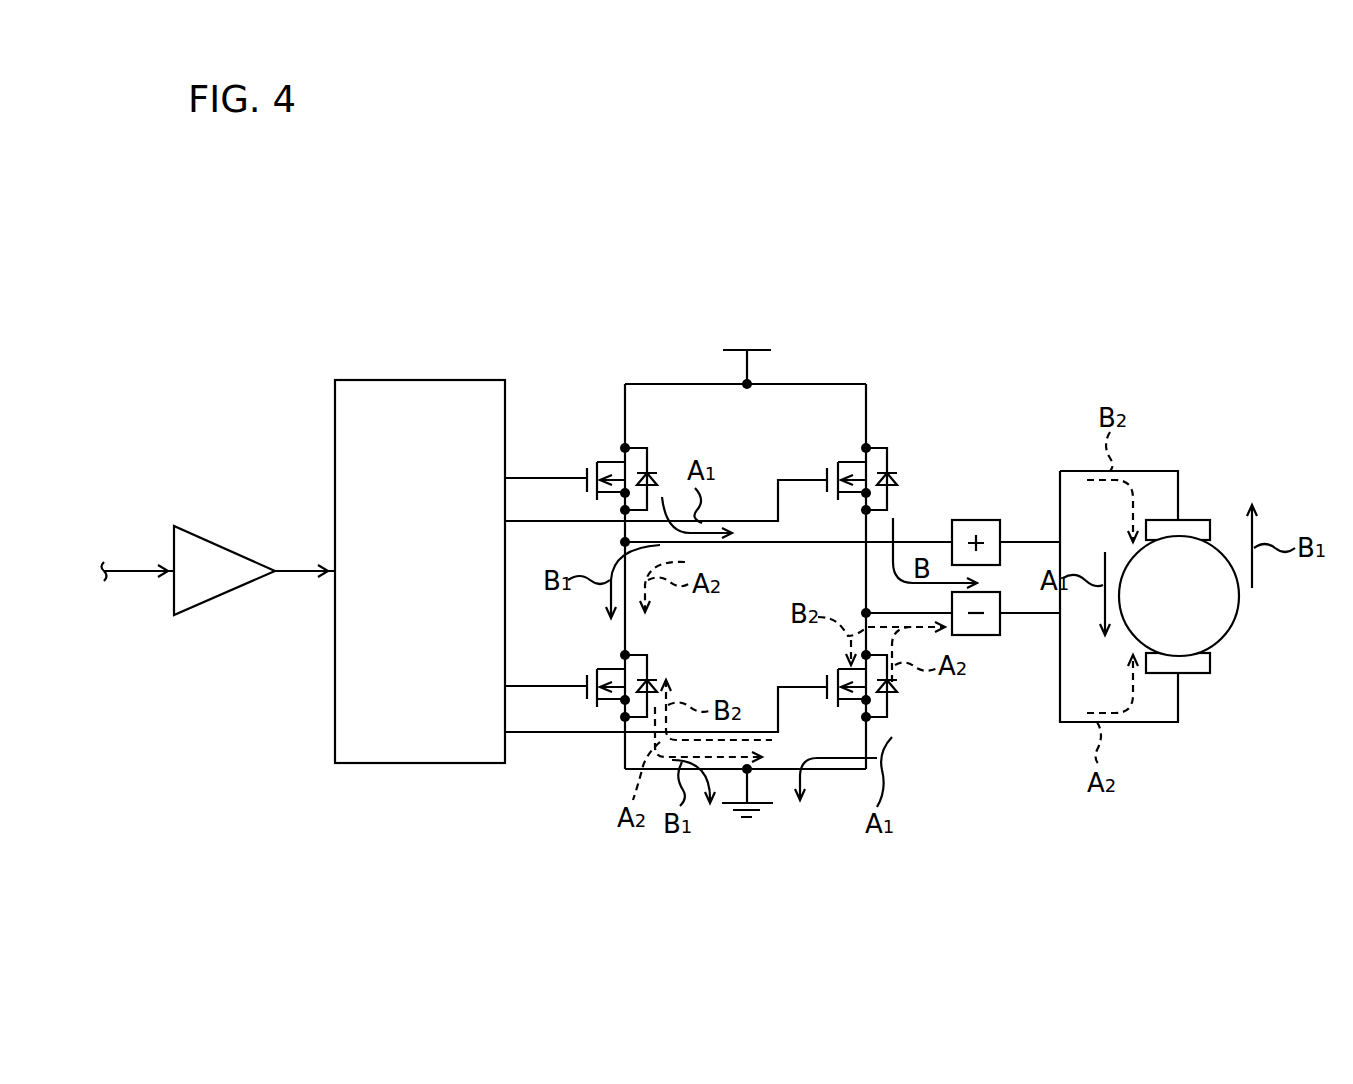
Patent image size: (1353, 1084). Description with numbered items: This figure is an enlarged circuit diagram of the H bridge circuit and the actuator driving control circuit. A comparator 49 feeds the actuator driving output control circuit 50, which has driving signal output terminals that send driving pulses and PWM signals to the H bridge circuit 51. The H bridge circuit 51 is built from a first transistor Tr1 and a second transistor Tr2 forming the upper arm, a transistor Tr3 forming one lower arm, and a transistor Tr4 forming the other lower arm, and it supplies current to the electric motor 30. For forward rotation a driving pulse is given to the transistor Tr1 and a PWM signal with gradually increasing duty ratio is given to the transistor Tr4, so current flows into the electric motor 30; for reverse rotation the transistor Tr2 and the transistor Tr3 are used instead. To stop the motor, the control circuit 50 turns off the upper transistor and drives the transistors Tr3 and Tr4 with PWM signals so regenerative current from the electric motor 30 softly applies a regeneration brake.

The comparator 49 is at (220, 554).
The actuator driving output control circuit 50 is at (419, 763).
The H bridge circuit 51 is at (782, 542).
The electric motor 30 is at (1232, 617).
The first transistor Tr1 is at (610, 466).
The second transistor Tr2 is at (875, 461).
The transistor Tr3 is at (610, 674).
The transistor Tr4 is at (881, 688).